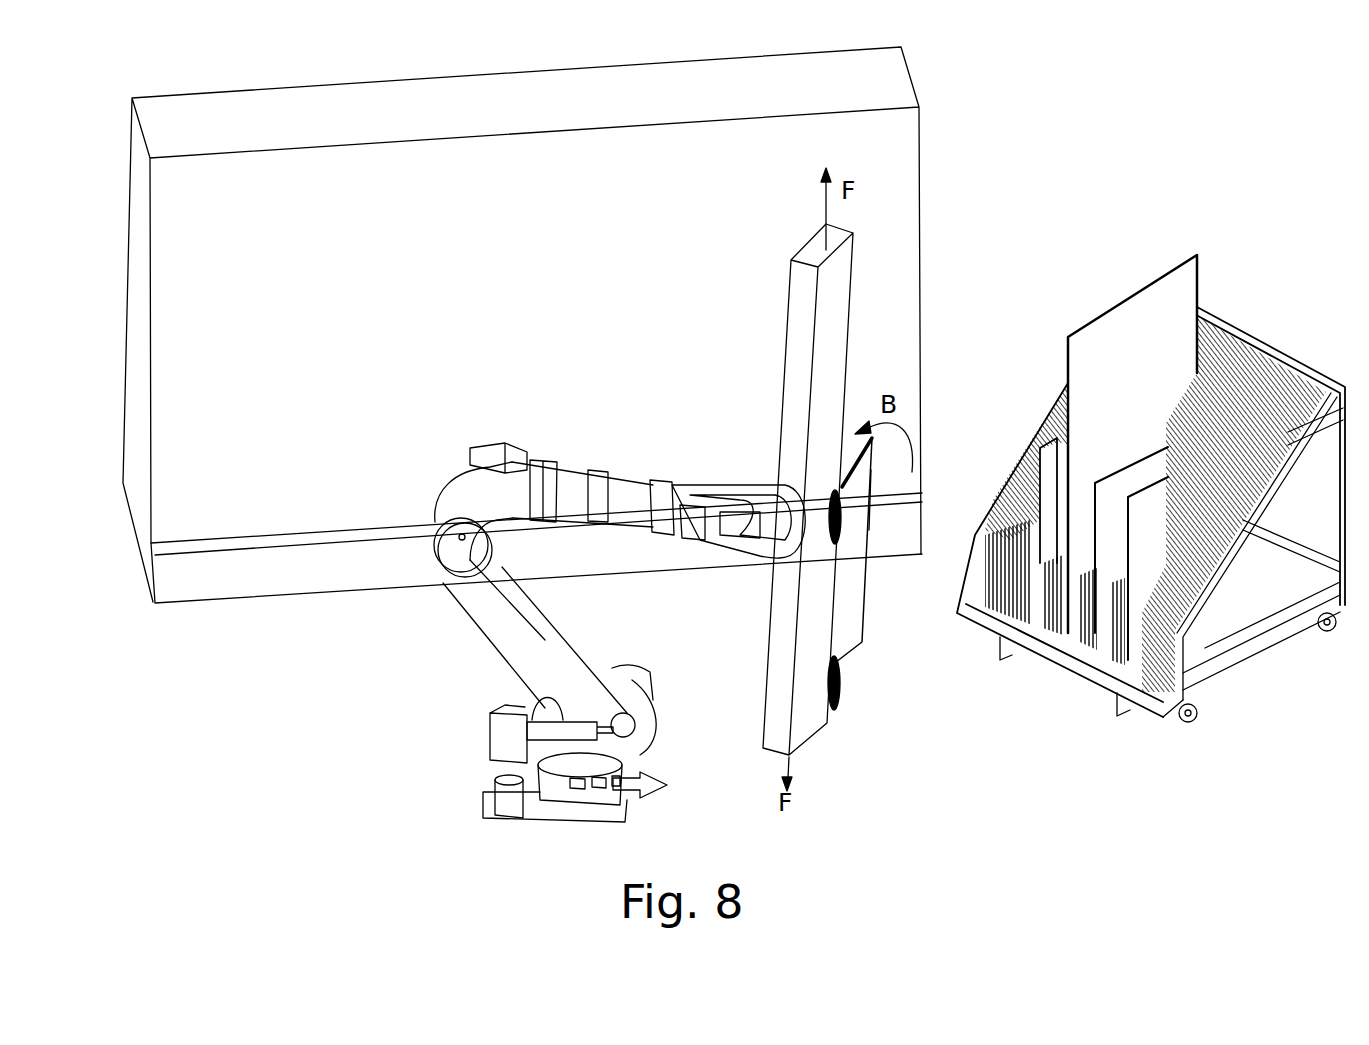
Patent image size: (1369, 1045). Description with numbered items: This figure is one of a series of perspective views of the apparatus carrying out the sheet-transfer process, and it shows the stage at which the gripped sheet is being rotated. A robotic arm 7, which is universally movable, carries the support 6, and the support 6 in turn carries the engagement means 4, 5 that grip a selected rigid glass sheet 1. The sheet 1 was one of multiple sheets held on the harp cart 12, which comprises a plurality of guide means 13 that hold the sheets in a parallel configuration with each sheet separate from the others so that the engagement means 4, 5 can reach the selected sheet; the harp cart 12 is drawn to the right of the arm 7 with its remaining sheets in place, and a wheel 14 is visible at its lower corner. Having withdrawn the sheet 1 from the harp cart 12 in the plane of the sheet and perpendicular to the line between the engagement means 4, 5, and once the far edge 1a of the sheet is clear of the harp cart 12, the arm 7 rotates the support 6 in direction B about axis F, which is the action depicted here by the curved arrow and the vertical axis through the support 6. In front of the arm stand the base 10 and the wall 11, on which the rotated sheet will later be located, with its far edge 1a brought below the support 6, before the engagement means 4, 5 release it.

The rigid glass sheet 1 is at (850, 625).
The far edge of the sheet 1a is at (886, 527).
The engagement means 4 is at (840, 690).
The engagement means 5 is at (835, 546).
The support 6 is at (803, 720).
The robotic arm 7 is at (630, 502).
The base 10 is at (307, 527).
The wall 11 is at (897, 172).
The harp cart 12 is at (1265, 352).
The guide means 13 is at (1265, 462).
The wheel 14 is at (1200, 710).